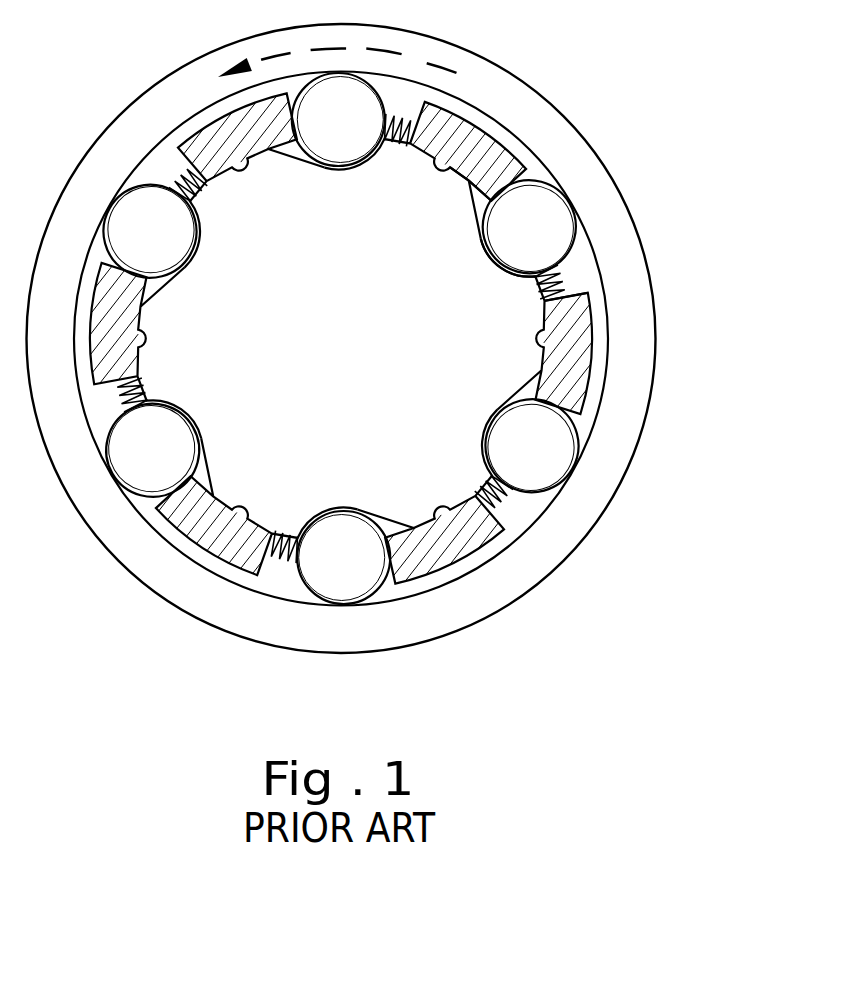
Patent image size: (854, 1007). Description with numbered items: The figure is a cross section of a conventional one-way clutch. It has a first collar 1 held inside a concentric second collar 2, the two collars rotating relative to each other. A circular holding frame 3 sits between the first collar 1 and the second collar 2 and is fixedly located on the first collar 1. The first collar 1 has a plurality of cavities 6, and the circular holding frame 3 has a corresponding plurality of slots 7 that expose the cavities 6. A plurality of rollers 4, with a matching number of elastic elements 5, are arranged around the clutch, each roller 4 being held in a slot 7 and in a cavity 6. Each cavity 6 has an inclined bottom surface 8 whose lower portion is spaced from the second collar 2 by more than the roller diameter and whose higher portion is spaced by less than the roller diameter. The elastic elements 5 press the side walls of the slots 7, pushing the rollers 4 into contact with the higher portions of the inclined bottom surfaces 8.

The first collar 1 is at (489, 137).
The second collar 2 is at (612, 230).
The circular holding frame 3 is at (577, 355).
The roller 4 is at (534, 217).
The elastic element 5 is at (574, 297).
The cavity 6 is at (517, 278).
The slot 7 is at (579, 283).
The inclined bottom surface 8 is at (468, 182).